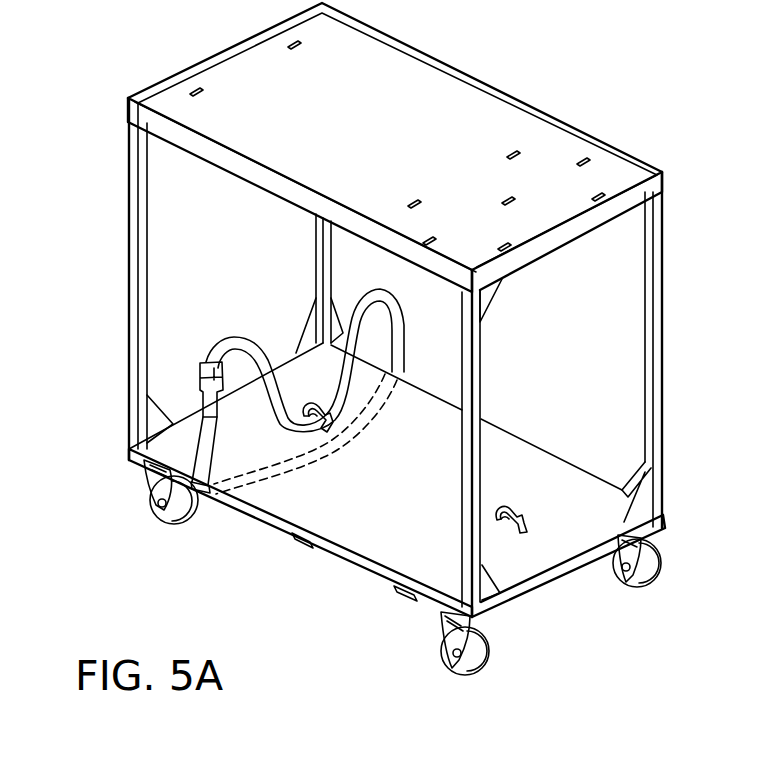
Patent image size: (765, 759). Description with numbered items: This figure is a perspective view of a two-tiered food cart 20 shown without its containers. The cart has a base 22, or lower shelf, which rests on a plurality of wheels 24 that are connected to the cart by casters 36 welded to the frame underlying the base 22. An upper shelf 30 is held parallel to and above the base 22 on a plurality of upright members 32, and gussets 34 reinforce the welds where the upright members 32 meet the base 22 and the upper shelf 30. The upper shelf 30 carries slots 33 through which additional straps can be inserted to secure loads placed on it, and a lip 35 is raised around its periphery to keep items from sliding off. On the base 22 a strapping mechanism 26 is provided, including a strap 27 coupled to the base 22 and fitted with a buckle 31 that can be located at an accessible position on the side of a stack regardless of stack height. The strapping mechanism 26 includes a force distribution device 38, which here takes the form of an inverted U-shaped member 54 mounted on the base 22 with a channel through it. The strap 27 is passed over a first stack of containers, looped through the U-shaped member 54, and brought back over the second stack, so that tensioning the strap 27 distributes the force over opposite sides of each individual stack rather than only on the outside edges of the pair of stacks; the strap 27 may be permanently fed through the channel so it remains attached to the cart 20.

The food cart 20 is at (108, 239).
The base 22 is at (358, 530).
The wheels 24 is at (150, 514).
The strapping mechanism 26 is at (197, 409).
The strap 27 is at (237, 338).
The upper shelf 30 is at (492, 113).
The buckle 31 is at (203, 373).
The upright members 32 is at (137, 320).
The slots 33 is at (585, 159).
The gussets 34 is at (146, 417).
The lip 35 is at (443, 67).
The casters 36 is at (148, 478).
The force distribution device 38 is at (334, 417).
The inverted U-shaped member 54 is at (330, 430).